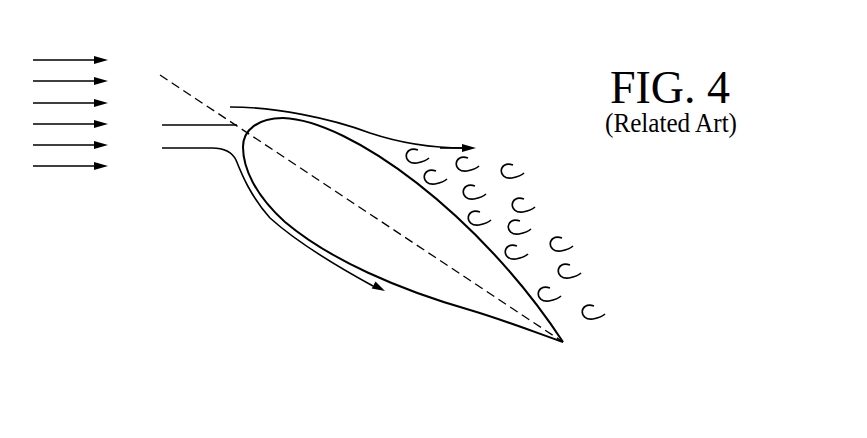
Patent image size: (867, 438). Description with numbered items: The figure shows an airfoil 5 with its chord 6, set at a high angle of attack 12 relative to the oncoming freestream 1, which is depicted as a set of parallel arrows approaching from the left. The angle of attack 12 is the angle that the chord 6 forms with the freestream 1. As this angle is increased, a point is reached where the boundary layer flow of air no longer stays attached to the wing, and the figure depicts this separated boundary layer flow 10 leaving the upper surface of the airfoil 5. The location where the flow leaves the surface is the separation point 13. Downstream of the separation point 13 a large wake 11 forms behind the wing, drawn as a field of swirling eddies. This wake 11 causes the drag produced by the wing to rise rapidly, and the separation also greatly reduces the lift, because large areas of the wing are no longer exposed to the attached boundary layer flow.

The freestream 1 is at (61, 58).
The airfoil 5 is at (477, 307).
The chord 6 is at (442, 262).
The separated boundary layer flow 10 is at (451, 148).
The wake 11 is at (537, 220).
The angle of attack 12 is at (273, 197).
The separation point 13 is at (399, 140).